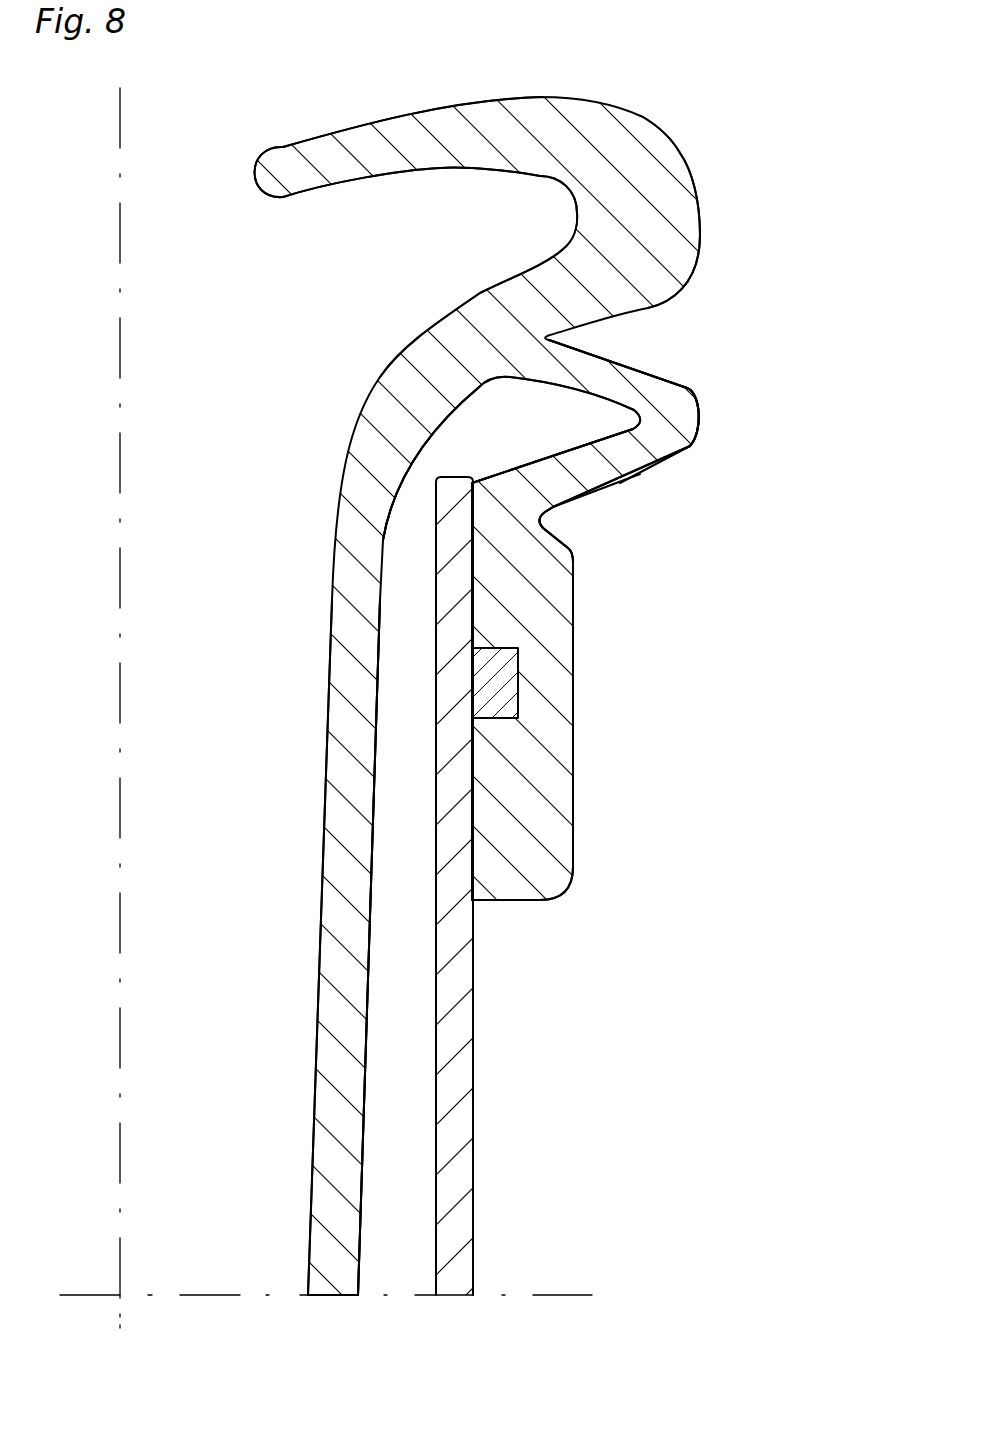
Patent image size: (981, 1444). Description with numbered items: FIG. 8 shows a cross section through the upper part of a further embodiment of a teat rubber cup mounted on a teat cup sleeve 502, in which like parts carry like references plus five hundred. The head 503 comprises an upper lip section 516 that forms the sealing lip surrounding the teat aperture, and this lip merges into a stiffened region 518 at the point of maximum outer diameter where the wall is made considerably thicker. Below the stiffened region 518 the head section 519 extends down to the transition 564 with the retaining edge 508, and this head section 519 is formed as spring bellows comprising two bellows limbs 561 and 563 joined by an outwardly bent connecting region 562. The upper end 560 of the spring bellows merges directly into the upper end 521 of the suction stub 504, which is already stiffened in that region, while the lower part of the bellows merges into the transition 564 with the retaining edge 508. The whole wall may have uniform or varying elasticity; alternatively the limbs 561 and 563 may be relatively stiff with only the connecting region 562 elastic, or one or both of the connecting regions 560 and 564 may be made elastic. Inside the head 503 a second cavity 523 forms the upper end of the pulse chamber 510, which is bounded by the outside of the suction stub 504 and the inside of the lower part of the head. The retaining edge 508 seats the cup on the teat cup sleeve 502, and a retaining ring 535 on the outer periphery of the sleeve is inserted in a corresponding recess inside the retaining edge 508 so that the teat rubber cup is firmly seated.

The head 503 is at (648, 92).
The upper lip section 516 is at (387, 135).
The stiffened region 518 is at (672, 170).
The upper end of the suction stub 521 is at (560, 273).
The upper end of the spring bellows 560 is at (488, 340).
The head section 519 is at (742, 425).
The bellows limb 561 is at (640, 382).
The connecting region 562 is at (663, 430).
The bellows limb 563 is at (590, 480).
The transition 564 is at (540, 527).
The second cavity 523 is at (527, 432).
The retaining edge 508 is at (533, 802).
The retaining ring 535 is at (500, 685).
The suction stub 504 is at (352, 1126).
The pulse chamber 510 is at (417, 1116).
The teat cup sleeve 502 is at (462, 1145).